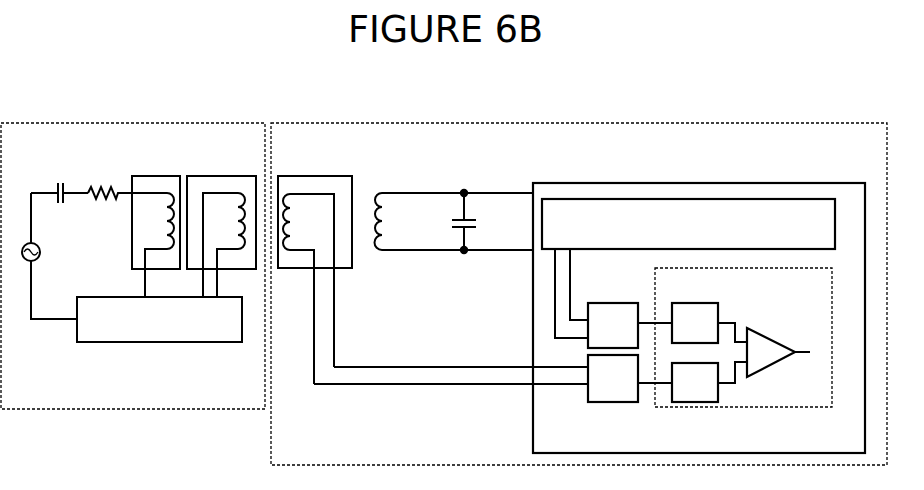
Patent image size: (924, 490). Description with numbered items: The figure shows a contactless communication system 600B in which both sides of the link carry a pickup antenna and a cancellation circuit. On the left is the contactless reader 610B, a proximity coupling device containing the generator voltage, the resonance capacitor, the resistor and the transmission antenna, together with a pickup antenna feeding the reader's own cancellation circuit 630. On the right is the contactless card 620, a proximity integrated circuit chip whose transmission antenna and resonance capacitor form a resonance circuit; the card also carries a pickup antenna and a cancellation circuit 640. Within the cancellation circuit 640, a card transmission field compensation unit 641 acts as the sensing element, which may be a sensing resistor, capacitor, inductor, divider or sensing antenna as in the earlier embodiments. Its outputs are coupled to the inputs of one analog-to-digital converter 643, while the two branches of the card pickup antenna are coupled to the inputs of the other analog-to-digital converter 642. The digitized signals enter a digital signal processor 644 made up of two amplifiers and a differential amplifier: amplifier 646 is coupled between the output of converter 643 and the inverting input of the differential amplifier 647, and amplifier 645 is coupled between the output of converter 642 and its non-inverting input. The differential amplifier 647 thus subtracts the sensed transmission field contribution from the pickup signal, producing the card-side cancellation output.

The contactless communication system 600B is at (757, 86).
The contactless reader 610B is at (227, 123).
The contactless card 620 is at (797, 123).
The reader cancellation circuit 630 is at (200, 342).
The cancellation circuit 640 is at (777, 183).
The card transmission field compensation unit 641 is at (812, 199).
The analog-to-digital converter 642 is at (608, 402).
The analog-to-digital converter 643 is at (602, 303).
The digital signal processor 644 is at (808, 268).
The amplifier 645 is at (718, 388).
The amplifier 646 is at (720, 313).
The differential amplifier 647 is at (760, 332).